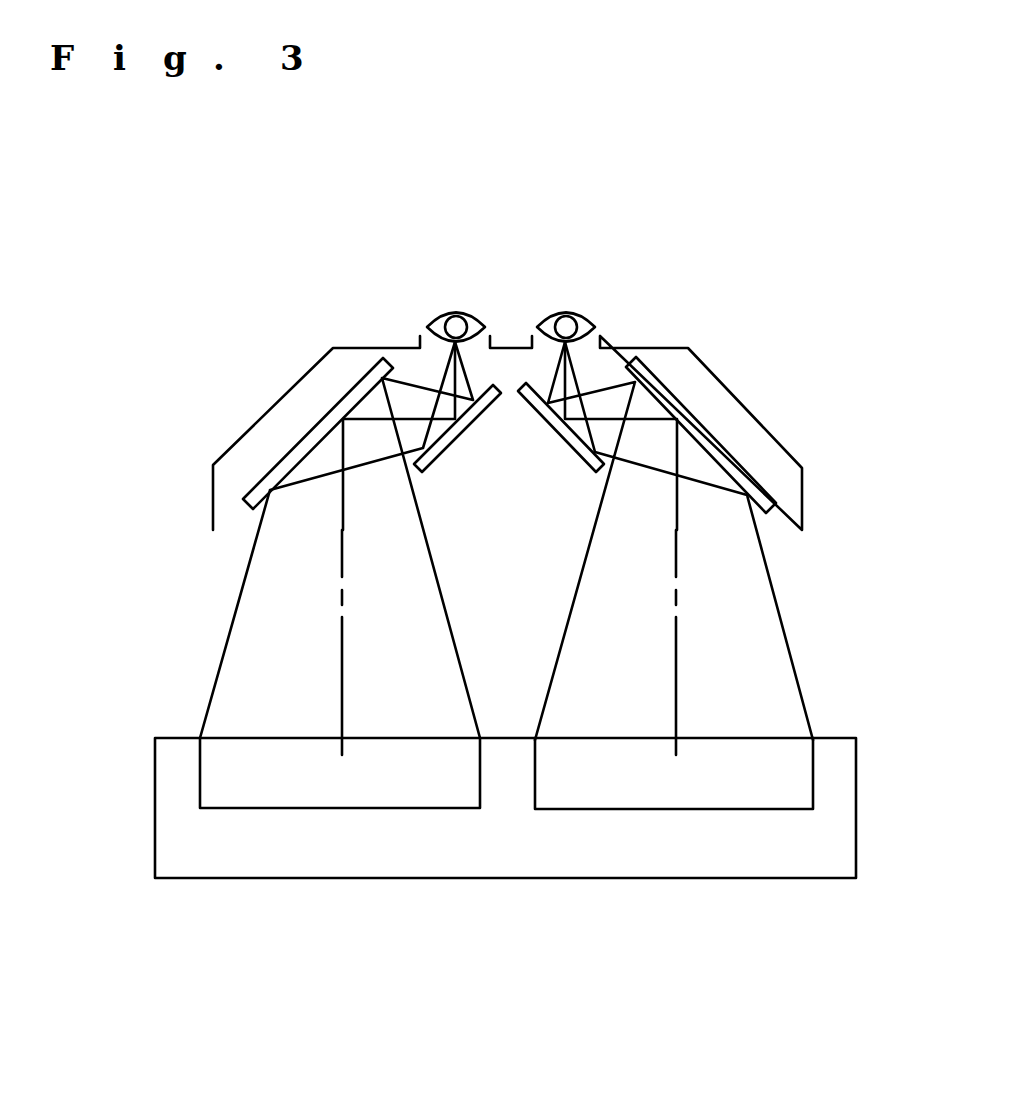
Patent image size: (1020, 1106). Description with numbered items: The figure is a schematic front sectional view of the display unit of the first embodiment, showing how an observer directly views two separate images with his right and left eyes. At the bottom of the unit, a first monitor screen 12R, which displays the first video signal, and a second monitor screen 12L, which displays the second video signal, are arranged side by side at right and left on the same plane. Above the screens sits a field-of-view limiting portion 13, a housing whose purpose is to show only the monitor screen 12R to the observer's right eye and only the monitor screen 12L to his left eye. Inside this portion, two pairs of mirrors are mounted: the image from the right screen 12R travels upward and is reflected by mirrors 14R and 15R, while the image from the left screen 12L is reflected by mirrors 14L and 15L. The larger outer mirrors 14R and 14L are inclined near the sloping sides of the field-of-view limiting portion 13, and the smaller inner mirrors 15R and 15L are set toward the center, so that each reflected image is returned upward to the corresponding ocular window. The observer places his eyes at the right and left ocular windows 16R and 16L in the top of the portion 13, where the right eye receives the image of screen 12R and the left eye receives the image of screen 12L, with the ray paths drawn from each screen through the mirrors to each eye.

The second monitor screen 12L is at (290, 792).
The first monitor screen 12R is at (727, 794).
The field-of-view limiting portion 13 is at (717, 378).
The mirror 14L is at (303, 447).
The mirror 14R is at (732, 457).
The mirror 15L is at (450, 442).
The mirror 15R is at (575, 445).
The left ocular window 16L is at (428, 347).
The right ocular window 16R is at (592, 346).